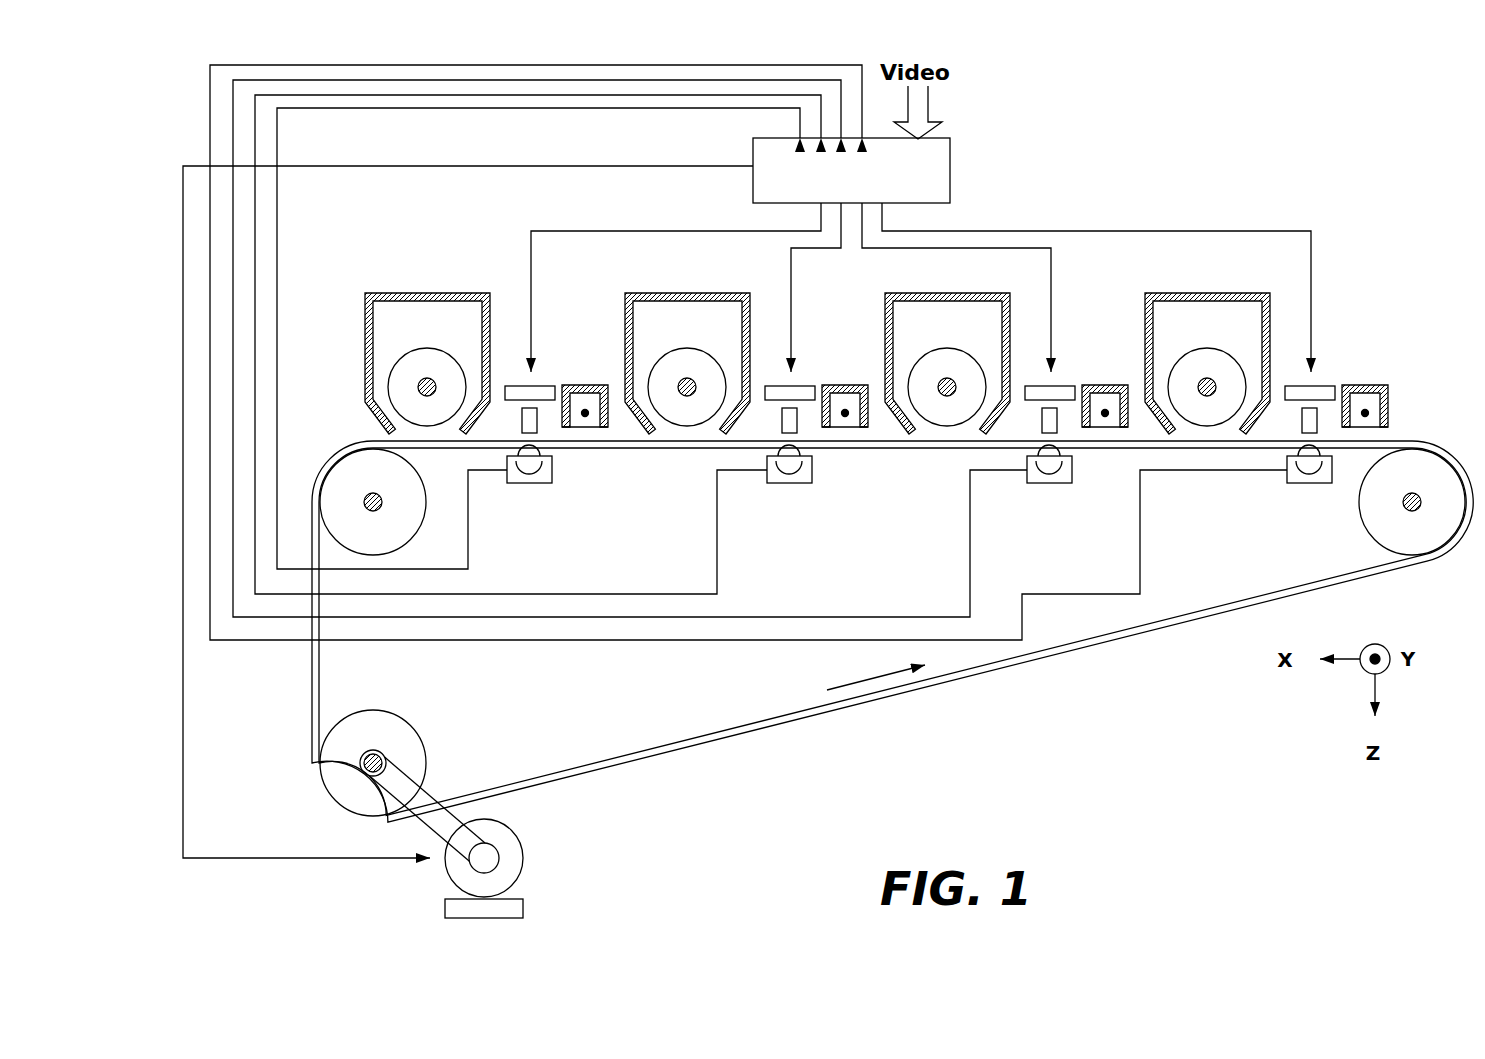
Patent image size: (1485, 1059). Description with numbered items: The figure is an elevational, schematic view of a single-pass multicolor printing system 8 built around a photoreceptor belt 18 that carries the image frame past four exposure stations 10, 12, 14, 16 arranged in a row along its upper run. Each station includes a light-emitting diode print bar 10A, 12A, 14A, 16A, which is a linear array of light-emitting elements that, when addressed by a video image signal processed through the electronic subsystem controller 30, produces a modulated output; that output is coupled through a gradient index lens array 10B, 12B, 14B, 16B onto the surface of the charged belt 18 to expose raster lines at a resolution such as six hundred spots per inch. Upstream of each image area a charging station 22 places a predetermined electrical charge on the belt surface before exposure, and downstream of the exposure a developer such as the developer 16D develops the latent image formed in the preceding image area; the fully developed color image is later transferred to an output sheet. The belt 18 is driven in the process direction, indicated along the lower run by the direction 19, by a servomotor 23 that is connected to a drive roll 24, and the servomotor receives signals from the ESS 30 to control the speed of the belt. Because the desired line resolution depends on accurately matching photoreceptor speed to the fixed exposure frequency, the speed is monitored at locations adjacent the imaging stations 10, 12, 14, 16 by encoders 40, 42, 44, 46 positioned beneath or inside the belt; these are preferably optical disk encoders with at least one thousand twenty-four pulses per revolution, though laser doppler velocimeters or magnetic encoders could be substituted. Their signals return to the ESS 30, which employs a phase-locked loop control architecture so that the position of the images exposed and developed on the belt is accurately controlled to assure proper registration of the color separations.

The single-pass multicolor printing system 8 is at (1348, 245).
The first exposure station 10 is at (1258, 396).
The LED print bar 10A is at (1318, 388).
The gradient index lens array 10B is at (1317, 422).
The second exposure station 12 is at (1004, 375).
The LED print bar 12A is at (1060, 388).
The gradient index lens array 12B is at (1057, 422).
The third exposure station 14 is at (754, 373).
The LED print bar 14A is at (800, 388).
The gradient index lens array 14B is at (797, 422).
The fourth exposure station 16 is at (493, 361).
The LED print bar 16A is at (540, 388).
The gradient index lens array 16B is at (533, 422).
The developer 16D is at (430, 293).
The photoreceptor belt 18 is at (658, 752).
The belt movement direction 19 is at (873, 677).
The charging station 22 is at (592, 384).
The servomotor 23 is at (548, 856).
The drive roll 24 is at (403, 720).
The electronic subsystem controller 30 is at (950, 172).
The encoder 40 is at (1306, 484).
The encoder 42 is at (1049, 484).
The encoder 44 is at (790, 484).
The encoder 46 is at (527, 484).